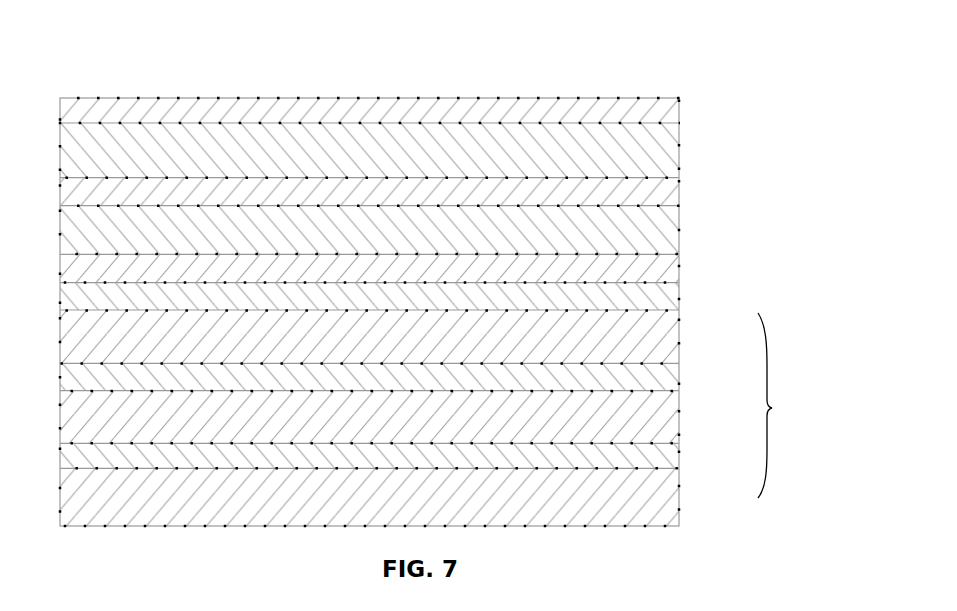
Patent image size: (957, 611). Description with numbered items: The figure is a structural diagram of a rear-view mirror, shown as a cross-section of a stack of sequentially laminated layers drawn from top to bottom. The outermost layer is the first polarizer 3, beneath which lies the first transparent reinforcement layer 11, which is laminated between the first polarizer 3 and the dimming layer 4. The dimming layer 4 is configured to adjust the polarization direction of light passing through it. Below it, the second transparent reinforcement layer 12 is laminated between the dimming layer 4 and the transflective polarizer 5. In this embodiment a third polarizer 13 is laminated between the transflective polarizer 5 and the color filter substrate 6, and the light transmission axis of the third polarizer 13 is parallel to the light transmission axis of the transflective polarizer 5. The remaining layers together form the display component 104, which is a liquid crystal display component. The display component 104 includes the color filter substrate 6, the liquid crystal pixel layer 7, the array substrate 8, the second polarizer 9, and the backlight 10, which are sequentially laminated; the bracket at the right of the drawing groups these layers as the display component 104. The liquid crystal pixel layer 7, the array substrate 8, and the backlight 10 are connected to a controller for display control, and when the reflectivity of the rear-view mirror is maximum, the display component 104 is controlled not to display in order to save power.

The first polarizer 3 is at (679, 98).
The first transparent reinforcement layer 11 is at (677, 143).
The dimming layer 4 is at (679, 183).
The second transparent reinforcement layer 12 is at (677, 220).
The transflective polarizer 5 is at (673, 265).
The third polarizer 13 is at (675, 299).
The color filter substrate 6 is at (675, 338).
The liquid crystal pixel layer 7 is at (675, 372).
The array substrate 8 is at (670, 423).
The second polarizer 9 is at (673, 459).
The backlight 10 is at (673, 513).
The display component 104 is at (779, 405).